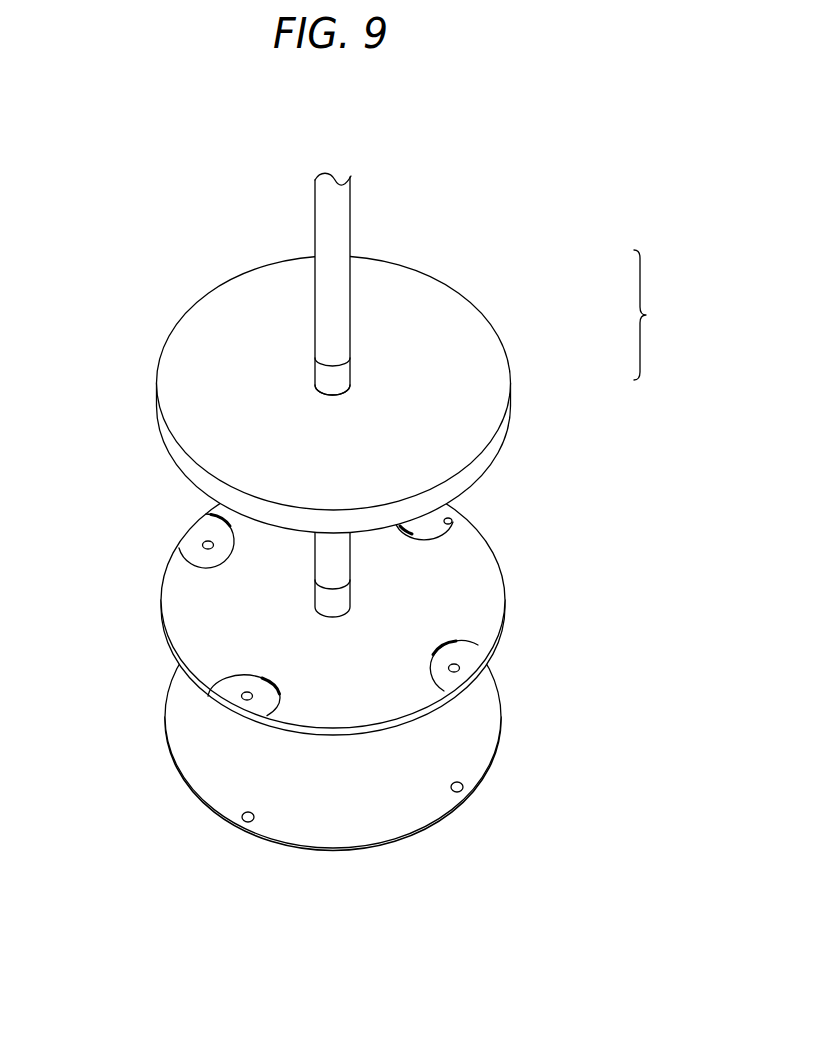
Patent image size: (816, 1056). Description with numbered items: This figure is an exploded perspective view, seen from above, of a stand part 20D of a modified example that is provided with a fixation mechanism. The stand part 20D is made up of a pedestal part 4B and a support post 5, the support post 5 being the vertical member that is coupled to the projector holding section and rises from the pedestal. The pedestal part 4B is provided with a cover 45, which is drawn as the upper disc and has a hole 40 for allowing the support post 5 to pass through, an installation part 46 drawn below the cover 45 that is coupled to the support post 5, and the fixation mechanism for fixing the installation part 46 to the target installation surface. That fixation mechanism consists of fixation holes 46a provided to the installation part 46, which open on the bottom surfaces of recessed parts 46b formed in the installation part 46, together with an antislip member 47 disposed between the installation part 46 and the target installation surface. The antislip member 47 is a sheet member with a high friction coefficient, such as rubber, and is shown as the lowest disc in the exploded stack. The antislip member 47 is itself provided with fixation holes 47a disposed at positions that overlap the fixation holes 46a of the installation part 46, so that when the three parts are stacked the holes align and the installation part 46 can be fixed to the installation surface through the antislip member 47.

The support post 5 is at (350, 217).
The hole 40 is at (330, 394).
The cover 45 is at (158, 422).
The installation part 46 is at (163, 620).
The fixation holes 46a is at (204, 543).
The recessed parts 46b is at (178, 562).
The antislip member 47 is at (178, 769).
The fixation holes 47a is at (247, 824).
The stand part 20D is at (664, 315).
The pedestal part 4B is at (570, 445).